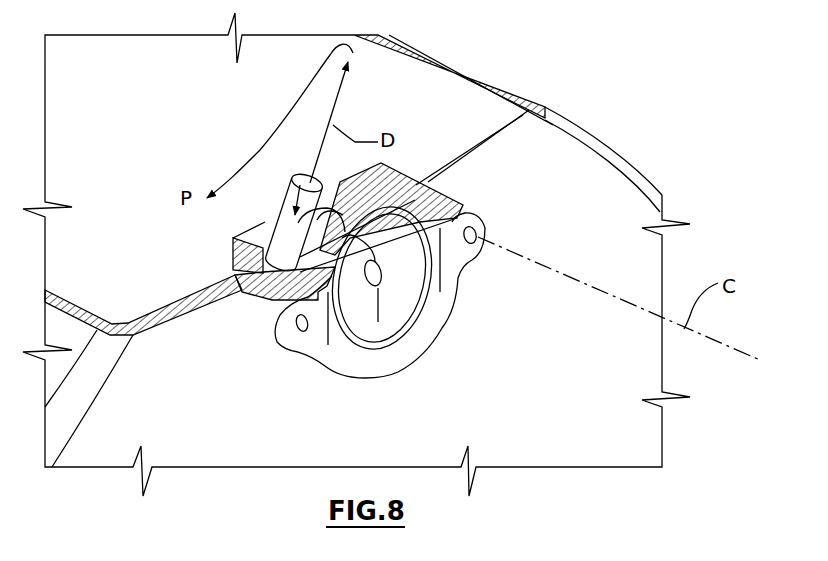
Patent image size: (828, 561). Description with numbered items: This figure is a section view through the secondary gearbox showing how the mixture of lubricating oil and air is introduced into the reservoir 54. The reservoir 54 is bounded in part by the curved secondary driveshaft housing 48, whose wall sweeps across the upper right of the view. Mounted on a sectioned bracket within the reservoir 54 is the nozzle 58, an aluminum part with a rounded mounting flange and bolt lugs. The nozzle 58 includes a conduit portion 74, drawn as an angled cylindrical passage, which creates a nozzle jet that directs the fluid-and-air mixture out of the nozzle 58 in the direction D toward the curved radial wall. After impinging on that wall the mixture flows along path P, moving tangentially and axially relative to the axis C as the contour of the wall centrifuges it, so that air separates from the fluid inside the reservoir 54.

The reservoir 54 is at (111, 122).
The secondary driveshaft housing 48 is at (627, 205).
The conduit portion 74 is at (292, 178).
The nozzle 58 is at (436, 287).